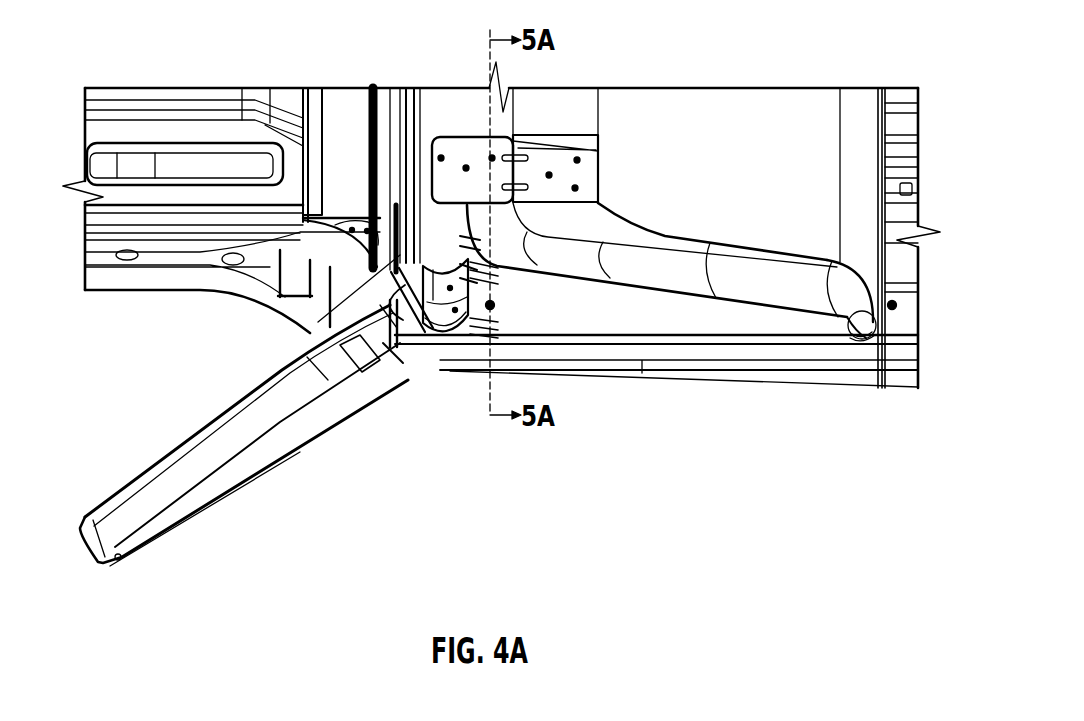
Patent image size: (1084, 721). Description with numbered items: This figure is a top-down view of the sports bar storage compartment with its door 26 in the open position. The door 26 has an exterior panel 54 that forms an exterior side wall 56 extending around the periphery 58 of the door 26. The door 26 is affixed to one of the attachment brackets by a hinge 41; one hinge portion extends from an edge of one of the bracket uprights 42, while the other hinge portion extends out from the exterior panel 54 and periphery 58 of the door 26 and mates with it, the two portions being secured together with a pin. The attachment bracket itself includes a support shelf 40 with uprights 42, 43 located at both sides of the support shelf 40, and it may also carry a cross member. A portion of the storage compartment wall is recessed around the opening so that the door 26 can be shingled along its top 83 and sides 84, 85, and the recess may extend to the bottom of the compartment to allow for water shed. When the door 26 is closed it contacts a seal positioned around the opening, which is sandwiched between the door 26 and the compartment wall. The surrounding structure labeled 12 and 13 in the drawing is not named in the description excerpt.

The vehicle body 12 is at (421, 128).
The tube 13 is at (523, 248).
The door 26 is at (138, 400).
The support shelf 40 is at (637, 322).
The hinge 41 is at (425, 332).
The upright 42 is at (445, 330).
The upright 43 is at (865, 337).
The exterior panel 54 is at (233, 407).
The exterior side wall 56 is at (195, 470).
The periphery 58 is at (138, 478).
The top 83 is at (347, 355).
The side 84 is at (385, 355).
The side 85 is at (230, 436).